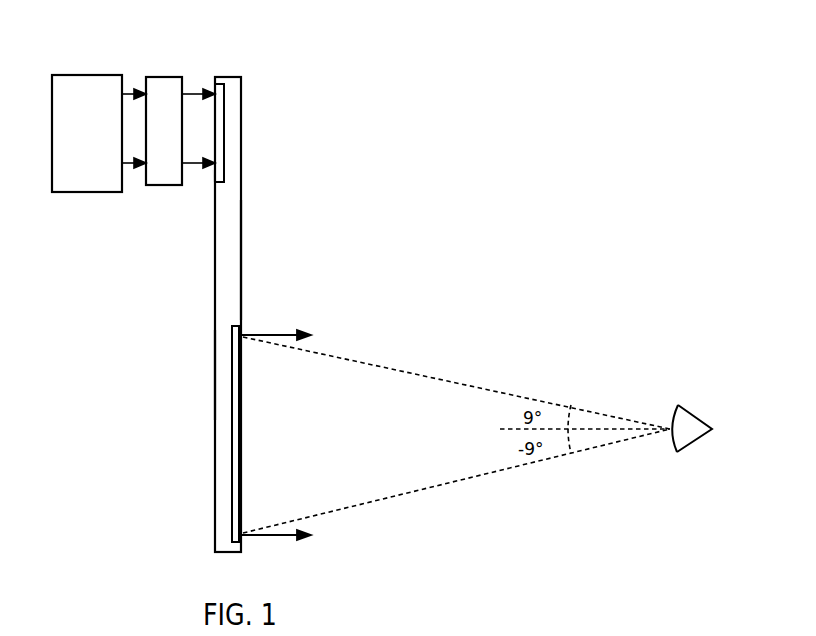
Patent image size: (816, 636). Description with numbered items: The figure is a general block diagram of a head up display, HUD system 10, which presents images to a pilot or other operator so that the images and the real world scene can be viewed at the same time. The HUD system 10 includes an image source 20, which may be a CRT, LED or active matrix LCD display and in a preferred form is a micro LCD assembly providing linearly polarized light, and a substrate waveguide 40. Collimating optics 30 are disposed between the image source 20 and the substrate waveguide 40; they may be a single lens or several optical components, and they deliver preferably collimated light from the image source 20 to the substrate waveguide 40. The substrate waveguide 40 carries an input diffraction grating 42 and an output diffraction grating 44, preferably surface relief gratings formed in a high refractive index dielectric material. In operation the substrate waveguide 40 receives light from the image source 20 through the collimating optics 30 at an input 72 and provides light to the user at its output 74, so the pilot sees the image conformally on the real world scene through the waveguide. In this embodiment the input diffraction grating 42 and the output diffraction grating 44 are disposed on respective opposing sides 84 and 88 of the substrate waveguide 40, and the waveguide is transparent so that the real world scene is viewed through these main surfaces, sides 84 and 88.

The HUD system 10 is at (272, 72).
The image source 20 is at (78, 193).
The collimating optics 30 is at (160, 187).
The substrate waveguide 40 is at (236, 251).
The input diffraction grating 42 is at (213, 92).
The input 72 is at (213, 173).
The output diffraction grating 44 is at (236, 452).
The output 74 is at (241, 493).
The side 84 is at (215, 369).
The side 88 is at (241, 297).